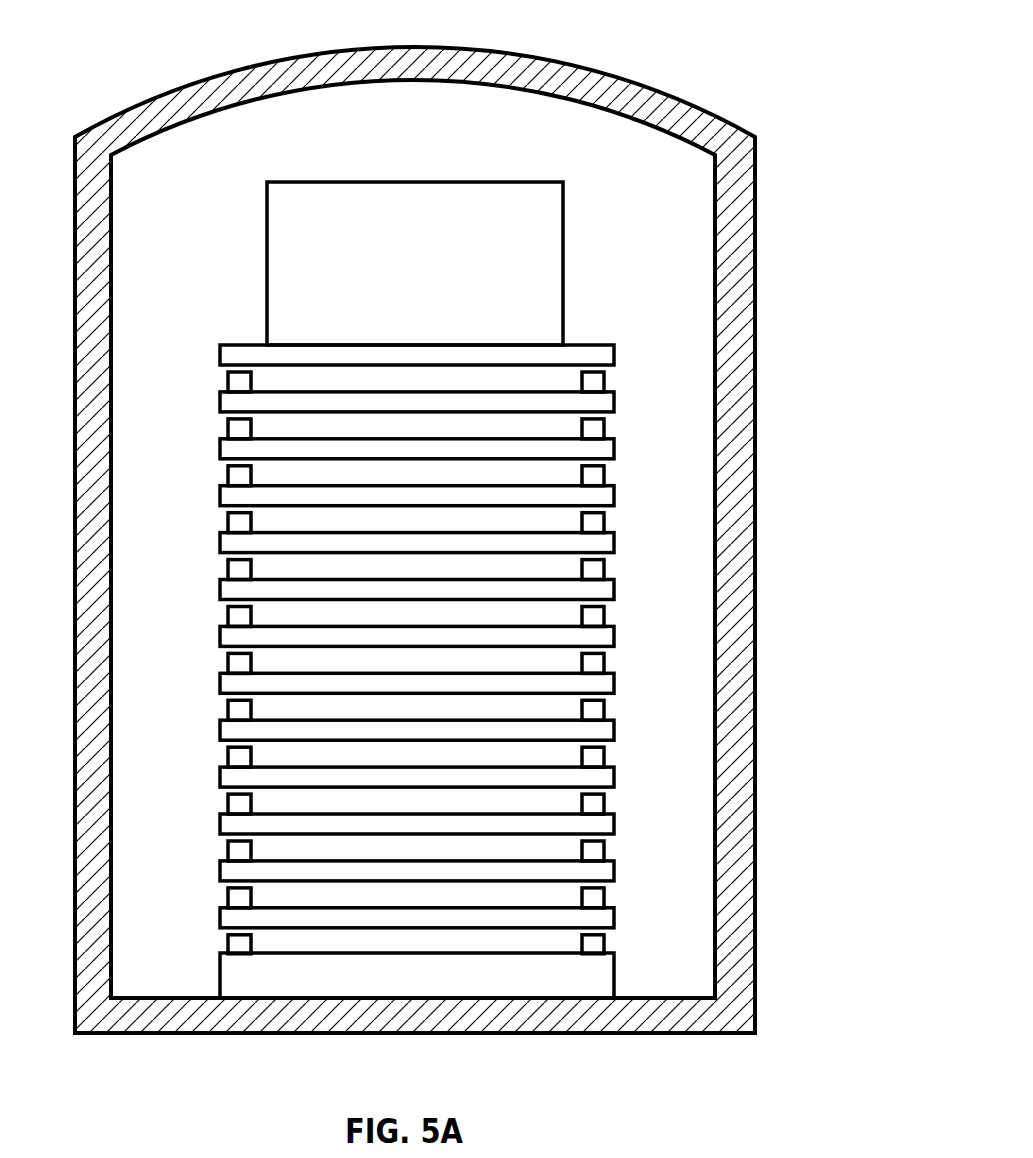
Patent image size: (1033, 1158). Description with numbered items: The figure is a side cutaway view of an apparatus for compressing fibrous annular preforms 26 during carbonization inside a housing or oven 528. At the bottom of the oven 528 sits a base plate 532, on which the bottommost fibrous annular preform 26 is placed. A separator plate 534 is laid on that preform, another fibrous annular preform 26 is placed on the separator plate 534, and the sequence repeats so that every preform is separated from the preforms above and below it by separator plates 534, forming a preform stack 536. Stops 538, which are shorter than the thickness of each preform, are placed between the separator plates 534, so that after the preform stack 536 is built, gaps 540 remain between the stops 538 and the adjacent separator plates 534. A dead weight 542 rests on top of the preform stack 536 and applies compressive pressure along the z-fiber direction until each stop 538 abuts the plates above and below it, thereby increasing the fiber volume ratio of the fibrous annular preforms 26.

The oven 528 is at (582, 60).
The dead weight 542 is at (265, 232).
The preform stack 536 is at (240, 338).
The separator plate 534 is at (217, 355).
The gap 540 is at (217, 380).
The stop 538 is at (224, 428).
The base plate 532 is at (618, 975).
The fibrous annular preform 26 is at (525, 370).